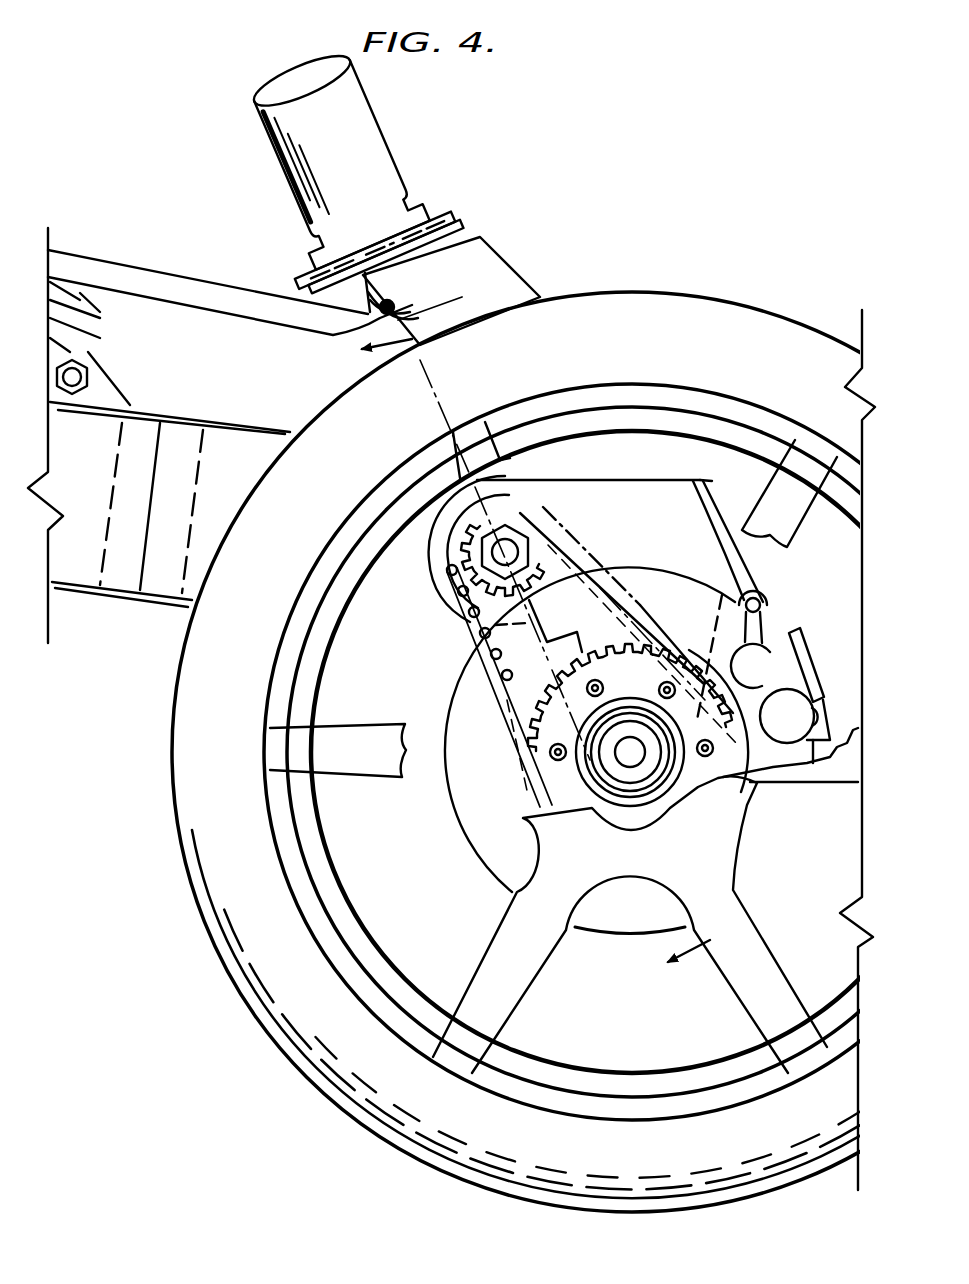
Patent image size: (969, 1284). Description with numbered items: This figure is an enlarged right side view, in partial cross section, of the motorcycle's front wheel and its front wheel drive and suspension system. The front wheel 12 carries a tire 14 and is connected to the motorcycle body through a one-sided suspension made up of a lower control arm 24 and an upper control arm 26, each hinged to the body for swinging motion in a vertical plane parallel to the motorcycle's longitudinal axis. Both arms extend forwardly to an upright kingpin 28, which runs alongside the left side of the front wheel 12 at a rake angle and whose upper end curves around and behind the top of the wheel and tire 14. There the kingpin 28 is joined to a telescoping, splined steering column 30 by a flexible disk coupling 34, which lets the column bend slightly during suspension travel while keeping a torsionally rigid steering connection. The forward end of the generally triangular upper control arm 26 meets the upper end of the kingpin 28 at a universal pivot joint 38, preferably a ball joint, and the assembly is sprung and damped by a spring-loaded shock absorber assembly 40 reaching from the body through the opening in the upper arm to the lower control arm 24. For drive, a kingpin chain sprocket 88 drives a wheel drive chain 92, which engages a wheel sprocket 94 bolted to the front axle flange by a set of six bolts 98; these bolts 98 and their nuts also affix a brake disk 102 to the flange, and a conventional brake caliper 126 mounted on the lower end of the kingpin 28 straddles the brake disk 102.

The front wheel 12 is at (340, 963).
The tire 14 is at (350, 1073).
The lower control arm 24 is at (123, 608).
The upper control arm 26 is at (190, 290).
The kingpin 28 is at (500, 285).
The steering column 30 is at (385, 118).
The flexible disk coupling 34 is at (440, 230).
The universal pivot joint 38 is at (377, 317).
The spring-loaded shock absorber assembly 40 is at (72, 330).
The kingpin chain sprocket 88 is at (535, 525).
The wheel drive chain 92 is at (470, 765).
The wheel sprocket 94 is at (557, 780).
The bolts 98 is at (712, 754).
The brake disk 102 is at (630, 928).
The brake caliper 126 is at (762, 650).